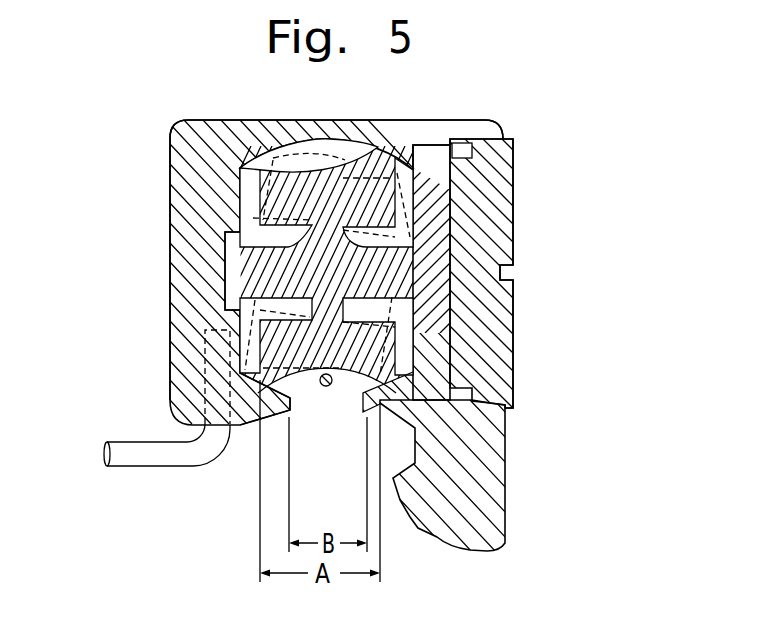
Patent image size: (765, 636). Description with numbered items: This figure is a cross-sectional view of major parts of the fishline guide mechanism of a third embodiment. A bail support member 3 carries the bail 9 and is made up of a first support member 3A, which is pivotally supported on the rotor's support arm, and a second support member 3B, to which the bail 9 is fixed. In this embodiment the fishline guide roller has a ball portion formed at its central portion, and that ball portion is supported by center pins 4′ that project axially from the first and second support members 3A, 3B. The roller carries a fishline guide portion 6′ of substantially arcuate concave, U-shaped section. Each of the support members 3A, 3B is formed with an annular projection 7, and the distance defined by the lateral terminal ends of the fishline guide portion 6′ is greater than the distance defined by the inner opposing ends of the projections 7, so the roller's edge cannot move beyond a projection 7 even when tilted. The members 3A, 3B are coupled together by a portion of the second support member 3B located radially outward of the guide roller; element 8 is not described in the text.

The bail support member 3 is at (522, 118).
The first support member 3A is at (483, 453).
The second support member 3B is at (177, 181).
The center pins 4′ is at (287, 295).
The fishline guide portion 6′ is at (295, 374).
The annular projection 7 is at (284, 398).
The pin 8 is at (331, 387).
The bail 9 is at (130, 453).